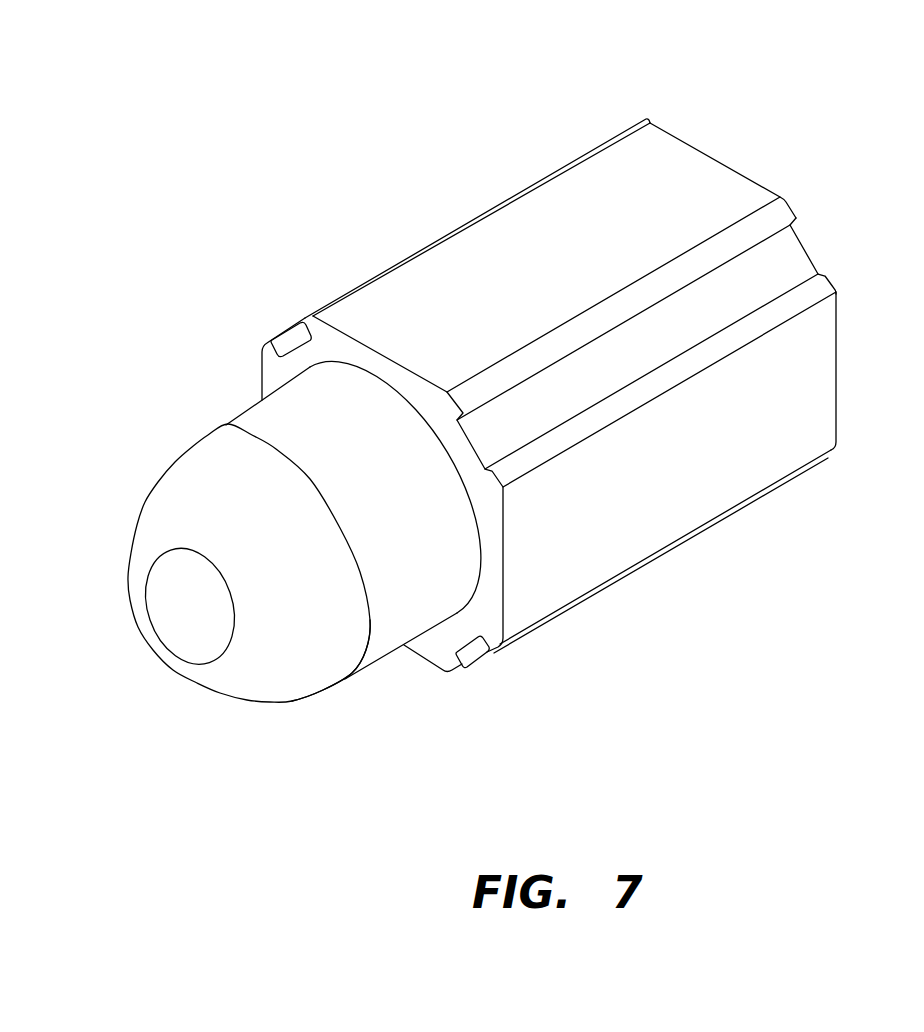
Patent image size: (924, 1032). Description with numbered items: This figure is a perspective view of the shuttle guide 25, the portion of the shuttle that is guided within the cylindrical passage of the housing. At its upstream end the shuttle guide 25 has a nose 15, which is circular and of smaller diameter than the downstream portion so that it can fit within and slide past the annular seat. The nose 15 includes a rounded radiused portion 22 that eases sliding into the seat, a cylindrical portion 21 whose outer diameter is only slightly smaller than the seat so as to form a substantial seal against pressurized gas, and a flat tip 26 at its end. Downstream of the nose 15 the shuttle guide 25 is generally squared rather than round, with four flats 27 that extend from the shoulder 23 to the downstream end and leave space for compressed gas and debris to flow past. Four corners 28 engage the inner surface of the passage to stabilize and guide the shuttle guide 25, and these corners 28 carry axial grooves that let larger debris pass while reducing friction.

The nose 15 is at (335, 682).
The cylindrical portion 21 is at (244, 422).
The radiused portion 22 is at (269, 689).
The shoulder 23 is at (432, 653).
The shuttle guide 25 is at (318, 189).
The flat tip 26 is at (195, 647).
The flats 27 is at (702, 162).
The corners 28 is at (643, 120).